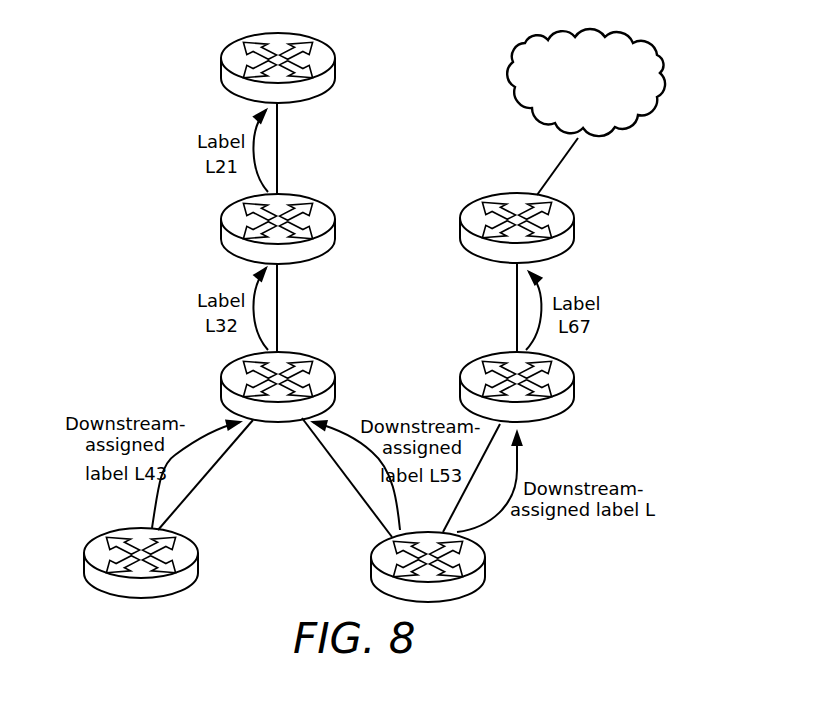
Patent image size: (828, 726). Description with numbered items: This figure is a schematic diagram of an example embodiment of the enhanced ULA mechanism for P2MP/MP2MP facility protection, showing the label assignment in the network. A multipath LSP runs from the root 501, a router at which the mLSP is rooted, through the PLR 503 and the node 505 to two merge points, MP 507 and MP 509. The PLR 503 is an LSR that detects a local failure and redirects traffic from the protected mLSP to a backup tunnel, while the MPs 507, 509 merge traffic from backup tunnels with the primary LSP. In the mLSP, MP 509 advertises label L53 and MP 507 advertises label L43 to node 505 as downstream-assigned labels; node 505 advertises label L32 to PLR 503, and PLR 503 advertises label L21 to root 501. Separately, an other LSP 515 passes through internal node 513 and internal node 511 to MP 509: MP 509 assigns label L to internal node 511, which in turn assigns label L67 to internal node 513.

The root 501 is at (221, 50).
The PLR 503 is at (221, 212).
The node 505 is at (220, 368).
The MP 507 is at (119, 530).
The MP 509 is at (488, 553).
The internal node 511 is at (576, 368).
The internal node 513 is at (576, 210).
The other LSP 515 is at (524, 46).